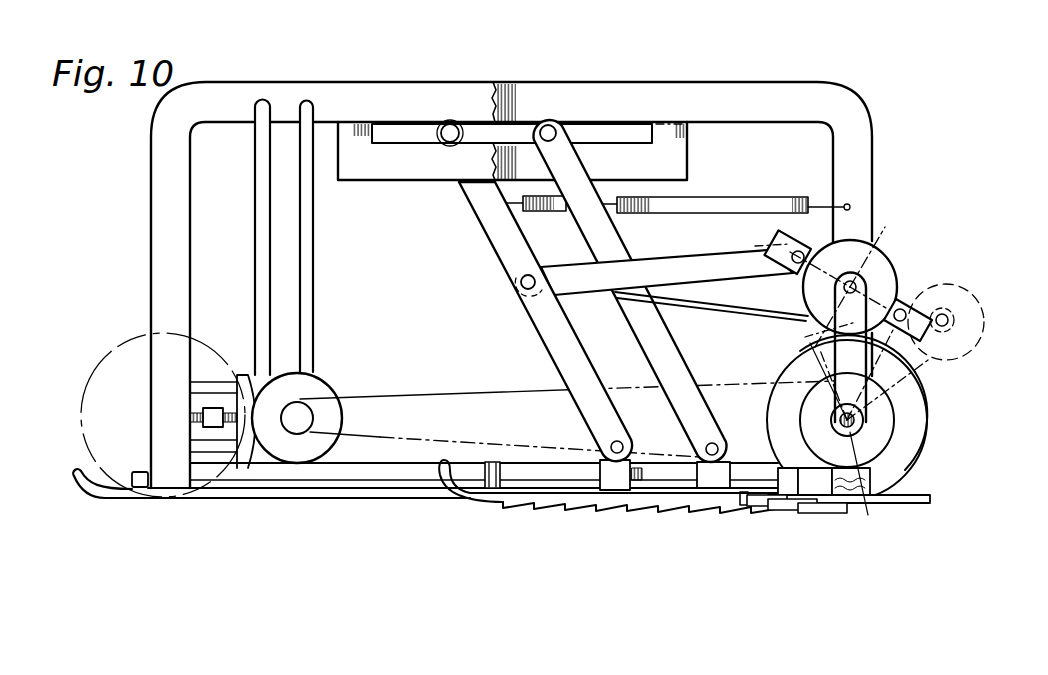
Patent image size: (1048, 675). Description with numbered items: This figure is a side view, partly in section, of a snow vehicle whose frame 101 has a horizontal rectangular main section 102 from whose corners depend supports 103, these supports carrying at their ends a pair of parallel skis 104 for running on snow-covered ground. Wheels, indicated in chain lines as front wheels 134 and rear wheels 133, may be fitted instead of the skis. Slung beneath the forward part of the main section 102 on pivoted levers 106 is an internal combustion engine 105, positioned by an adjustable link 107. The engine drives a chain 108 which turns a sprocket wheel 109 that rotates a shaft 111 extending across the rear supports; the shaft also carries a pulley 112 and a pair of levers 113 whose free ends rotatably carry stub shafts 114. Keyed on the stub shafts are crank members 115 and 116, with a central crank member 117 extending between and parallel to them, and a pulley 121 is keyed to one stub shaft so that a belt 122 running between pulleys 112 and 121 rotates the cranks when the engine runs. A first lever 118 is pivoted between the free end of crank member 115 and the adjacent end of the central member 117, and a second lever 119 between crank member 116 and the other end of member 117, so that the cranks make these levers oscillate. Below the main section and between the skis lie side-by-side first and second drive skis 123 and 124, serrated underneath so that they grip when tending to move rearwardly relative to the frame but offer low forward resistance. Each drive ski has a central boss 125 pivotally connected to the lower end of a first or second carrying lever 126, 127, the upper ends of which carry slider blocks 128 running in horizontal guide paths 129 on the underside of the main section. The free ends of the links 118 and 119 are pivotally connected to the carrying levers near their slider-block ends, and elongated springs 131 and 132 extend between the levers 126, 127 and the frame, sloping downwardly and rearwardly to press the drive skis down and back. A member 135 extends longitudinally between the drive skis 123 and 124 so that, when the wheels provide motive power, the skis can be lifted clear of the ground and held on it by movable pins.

The frame 101 is at (866, 100).
The main section 102 is at (713, 103).
The supports 103 is at (853, 189).
The skis 104 is at (293, 492).
The internal combustion engine 105 is at (318, 390).
The pivoted levers 106 is at (262, 297).
The adjustable link 107 is at (213, 407).
The chain 108 is at (383, 396).
The sprocket wheel 109 is at (897, 418).
The shaft 111 is at (876, 440).
The pulley 112 is at (849, 486).
The levers 113 is at (885, 273).
The stub shafts 114 is at (875, 249).
The crank member 115 is at (773, 243).
The crank member 116 is at (953, 275).
The central crank member 117 is at (817, 334).
The first lever 118 is at (643, 272).
The second lever 119 is at (722, 298).
The pulley 121 is at (800, 340).
The belt 122 is at (890, 380).
The first drive ski 123 is at (525, 497).
The second drive ski 124 is at (772, 510).
The central boss 125 is at (613, 481).
The first carrying lever 126 is at (498, 240).
The second carrying lever 127 is at (641, 328).
The slider blocks 128 is at (452, 122).
The guide paths 129 is at (396, 132).
The spring 131 is at (553, 209).
The spring 132 is at (715, 197).
The rear wheels 133 is at (930, 440).
The wheels 134 is at (123, 348).
The member 135 is at (518, 473).